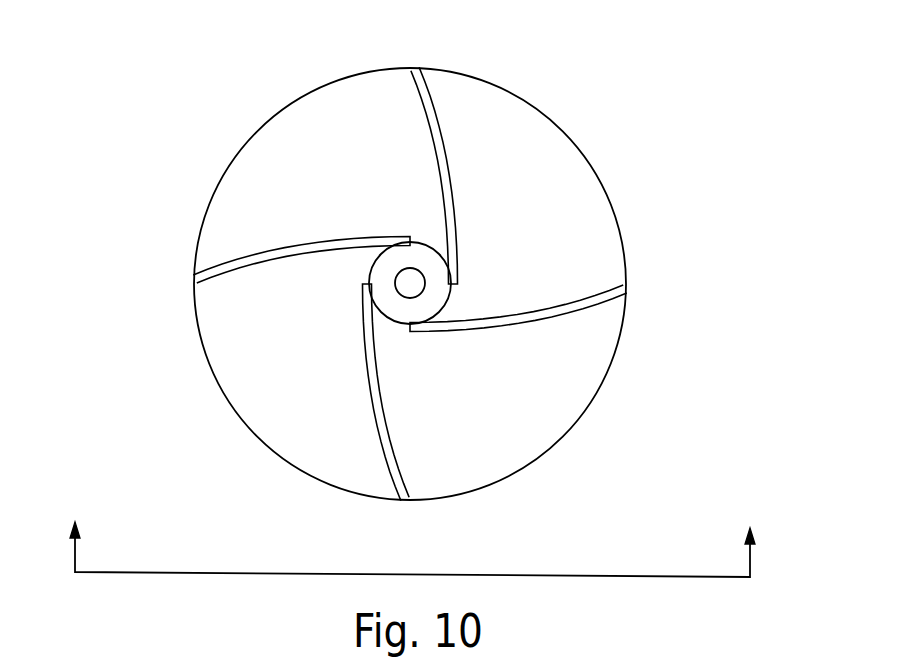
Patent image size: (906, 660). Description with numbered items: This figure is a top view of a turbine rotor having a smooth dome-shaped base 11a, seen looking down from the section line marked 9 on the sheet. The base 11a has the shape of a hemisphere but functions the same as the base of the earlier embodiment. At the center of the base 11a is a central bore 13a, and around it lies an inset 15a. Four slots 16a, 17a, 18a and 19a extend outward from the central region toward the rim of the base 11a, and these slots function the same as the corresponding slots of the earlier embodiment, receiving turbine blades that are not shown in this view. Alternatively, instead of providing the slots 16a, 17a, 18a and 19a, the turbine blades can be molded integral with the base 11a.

The base 11a is at (562, 82).
The central bore 13a is at (290, 196).
The inset 15a is at (538, 262).
The slot 16a is at (578, 350).
The slot 17a is at (360, 150).
The slot 18a is at (262, 322).
The slot 19a is at (456, 419).
The section line 9- 9 is at (411, 573).